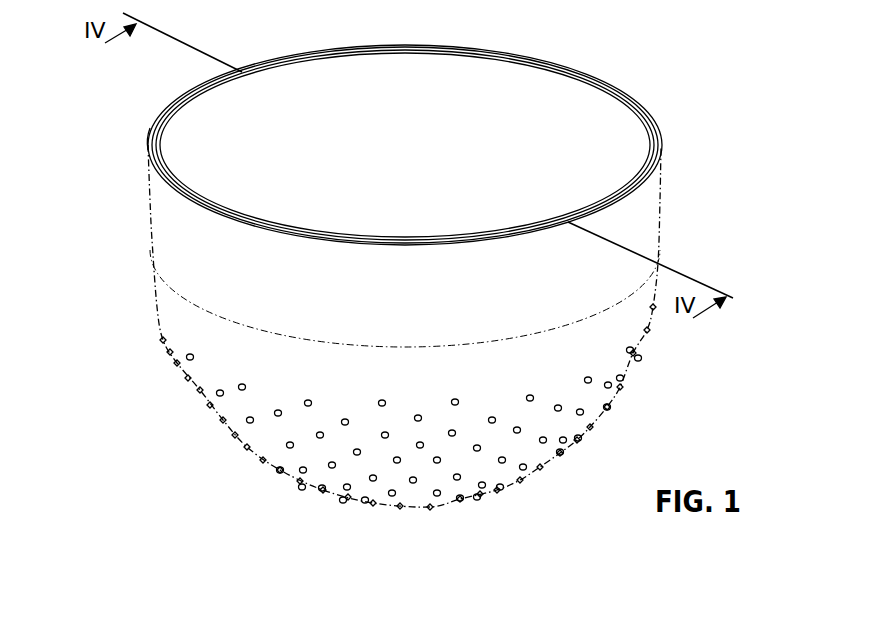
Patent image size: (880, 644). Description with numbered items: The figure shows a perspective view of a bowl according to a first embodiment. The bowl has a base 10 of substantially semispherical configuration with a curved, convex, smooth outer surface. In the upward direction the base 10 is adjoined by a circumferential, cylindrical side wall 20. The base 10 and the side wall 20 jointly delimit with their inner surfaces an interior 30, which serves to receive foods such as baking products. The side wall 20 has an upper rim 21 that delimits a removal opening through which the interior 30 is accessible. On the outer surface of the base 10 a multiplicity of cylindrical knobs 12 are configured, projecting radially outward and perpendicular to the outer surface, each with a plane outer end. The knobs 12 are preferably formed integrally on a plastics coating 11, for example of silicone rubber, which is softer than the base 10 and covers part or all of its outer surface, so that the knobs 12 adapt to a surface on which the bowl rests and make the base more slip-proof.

The base 10 is at (277, 210).
The plastics coating 11 is at (513, 448).
The knobs 12 is at (263, 457).
The side wall 20 is at (625, 215).
The upper rim 21 is at (148, 142).
The interior 30 is at (580, 125).